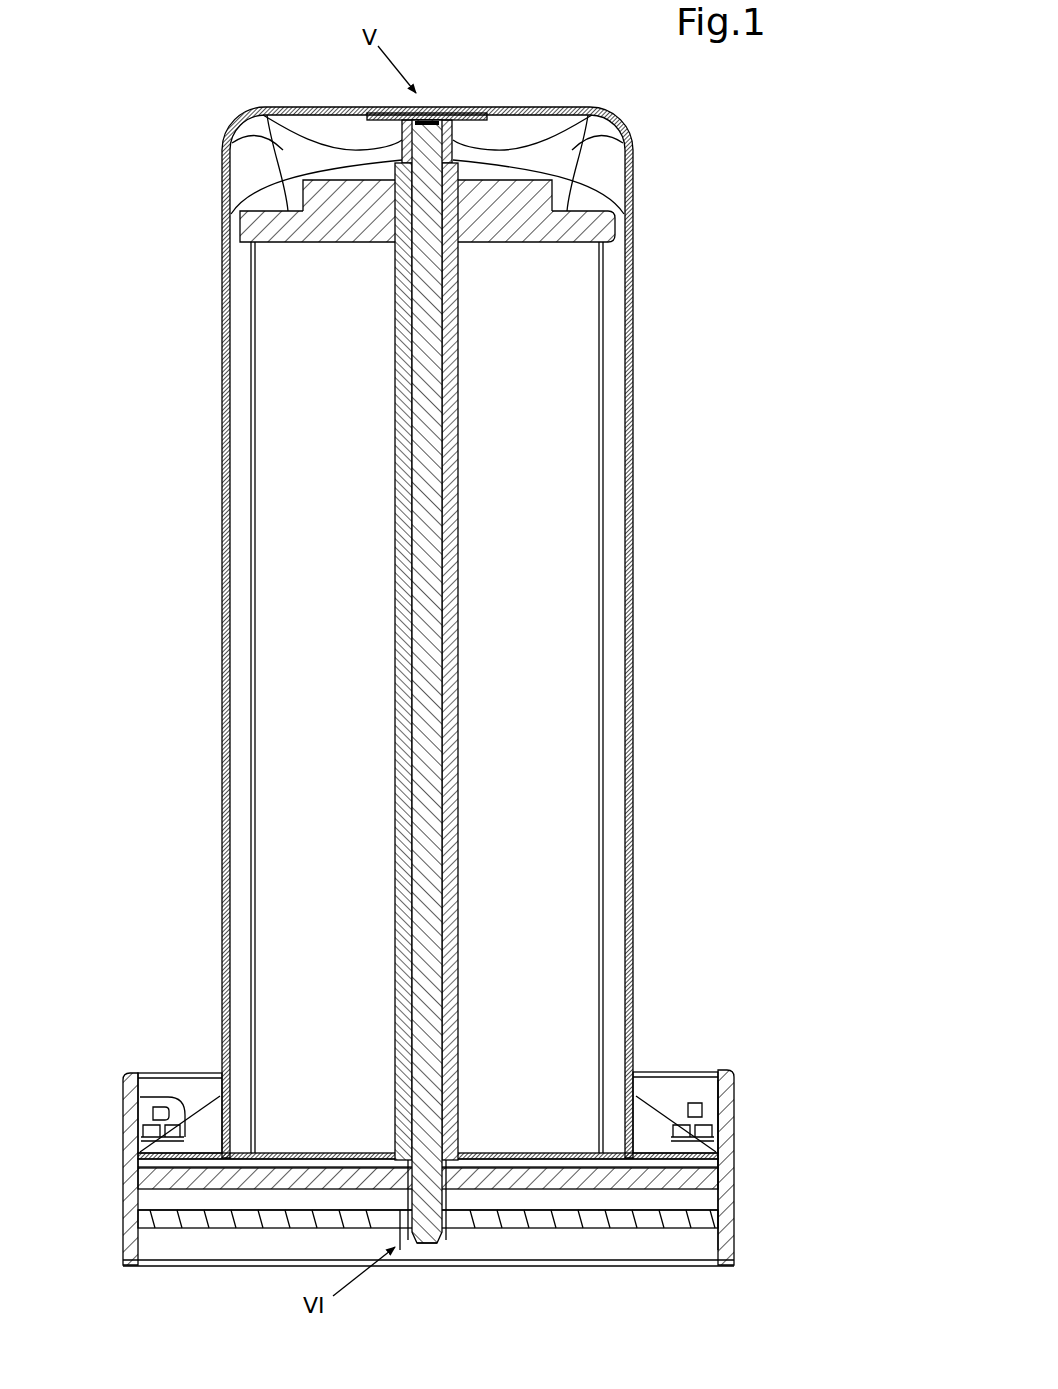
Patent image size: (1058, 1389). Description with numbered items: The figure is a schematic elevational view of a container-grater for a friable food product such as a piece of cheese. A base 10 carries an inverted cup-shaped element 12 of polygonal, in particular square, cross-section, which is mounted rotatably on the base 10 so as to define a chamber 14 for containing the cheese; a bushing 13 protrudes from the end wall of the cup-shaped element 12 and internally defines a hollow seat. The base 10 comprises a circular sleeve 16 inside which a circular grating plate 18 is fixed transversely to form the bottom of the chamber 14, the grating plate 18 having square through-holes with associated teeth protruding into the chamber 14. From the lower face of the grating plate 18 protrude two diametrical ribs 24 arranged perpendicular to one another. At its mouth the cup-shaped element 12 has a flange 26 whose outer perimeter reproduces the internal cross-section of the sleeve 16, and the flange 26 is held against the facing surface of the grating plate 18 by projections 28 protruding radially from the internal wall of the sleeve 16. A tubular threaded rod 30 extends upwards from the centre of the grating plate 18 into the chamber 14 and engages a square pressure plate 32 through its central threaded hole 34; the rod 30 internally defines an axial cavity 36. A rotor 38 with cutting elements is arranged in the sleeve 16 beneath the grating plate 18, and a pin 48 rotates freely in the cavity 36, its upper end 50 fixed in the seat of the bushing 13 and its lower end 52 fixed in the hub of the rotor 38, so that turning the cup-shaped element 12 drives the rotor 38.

The base 10 is at (737, 1165).
The inverted cup-shaped element 12 is at (636, 582).
The bushing 13 is at (468, 145).
The chamber 14 is at (541, 979).
The circular sleeve 16 is at (735, 1100).
The grating plate 18 is at (172, 1189).
The rib 24 is at (460, 1197).
The flange 26 is at (186, 1150).
The projections 28 is at (152, 1120).
The threaded rod 30 is at (460, 441).
The pressure plate 32 is at (572, 243).
The threaded hole 34 is at (628, 156).
The cavity 36 is at (453, 350).
The rotor 38 is at (608, 1232).
The pin 48 is at (445, 745).
The upper end 50 is at (262, 107).
The lower end 52 is at (410, 1160).